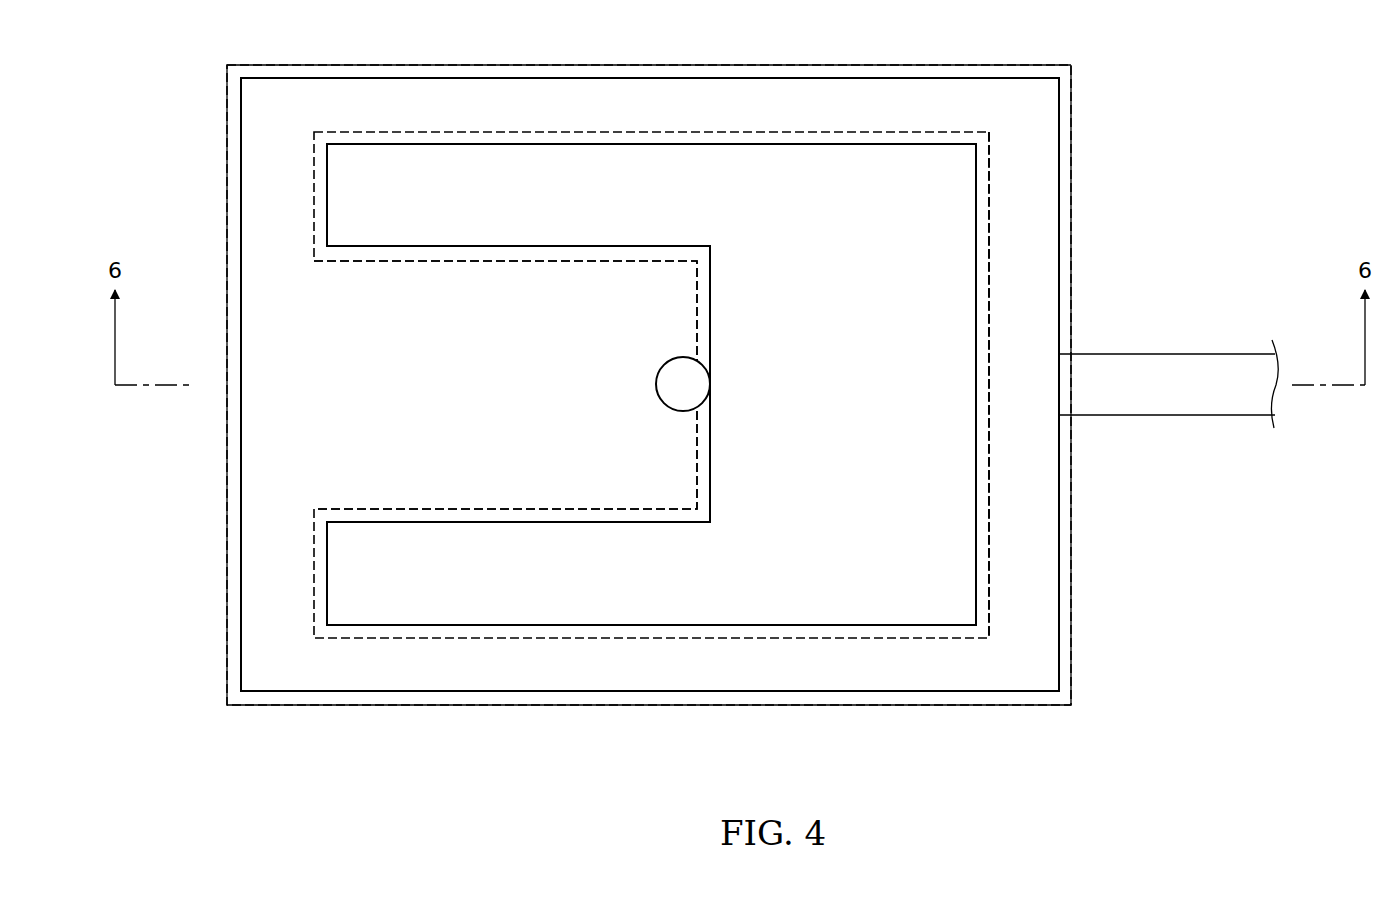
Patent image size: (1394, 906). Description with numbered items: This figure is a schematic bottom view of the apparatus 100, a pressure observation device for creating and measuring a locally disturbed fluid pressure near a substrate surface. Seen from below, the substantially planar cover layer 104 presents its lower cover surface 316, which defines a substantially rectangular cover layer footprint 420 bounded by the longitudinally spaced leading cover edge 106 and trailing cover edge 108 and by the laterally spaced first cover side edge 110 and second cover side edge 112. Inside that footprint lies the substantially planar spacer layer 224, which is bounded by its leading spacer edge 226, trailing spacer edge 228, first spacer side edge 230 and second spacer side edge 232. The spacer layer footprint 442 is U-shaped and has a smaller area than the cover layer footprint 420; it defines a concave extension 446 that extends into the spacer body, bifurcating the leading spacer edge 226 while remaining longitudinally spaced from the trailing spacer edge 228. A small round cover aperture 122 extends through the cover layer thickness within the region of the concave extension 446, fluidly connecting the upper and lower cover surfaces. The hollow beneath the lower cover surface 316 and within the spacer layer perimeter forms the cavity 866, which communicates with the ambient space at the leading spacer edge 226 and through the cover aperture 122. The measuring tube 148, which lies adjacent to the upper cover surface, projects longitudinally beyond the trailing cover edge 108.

The apparatus 100 is at (1222, 102).
The cover layer 104 is at (221, 596).
The leading cover edge 106 is at (227, 517).
The trailing cover edge 108 is at (1071, 176).
The first cover side edge 110 is at (527, 691).
The second cover side edge 112 is at (640, 78).
The cover aperture 122 is at (656, 384).
The measuring tube 148 is at (1099, 430).
The spacer layer 224 is at (651, 385).
The leading spacer edge 226 is at (327, 195).
The trailing spacer edge 228 is at (989, 270).
The first spacer side edge 230 is at (880, 625).
The second spacer side edge 232 is at (812, 144).
The lower cover surface 316 is at (518, 384).
The cover layer footprint 420 is at (619, 418).
The spacer layer footprint 442 is at (989, 528).
The concave extension 446 is at (599, 496).
The cavity 866 is at (286, 305).